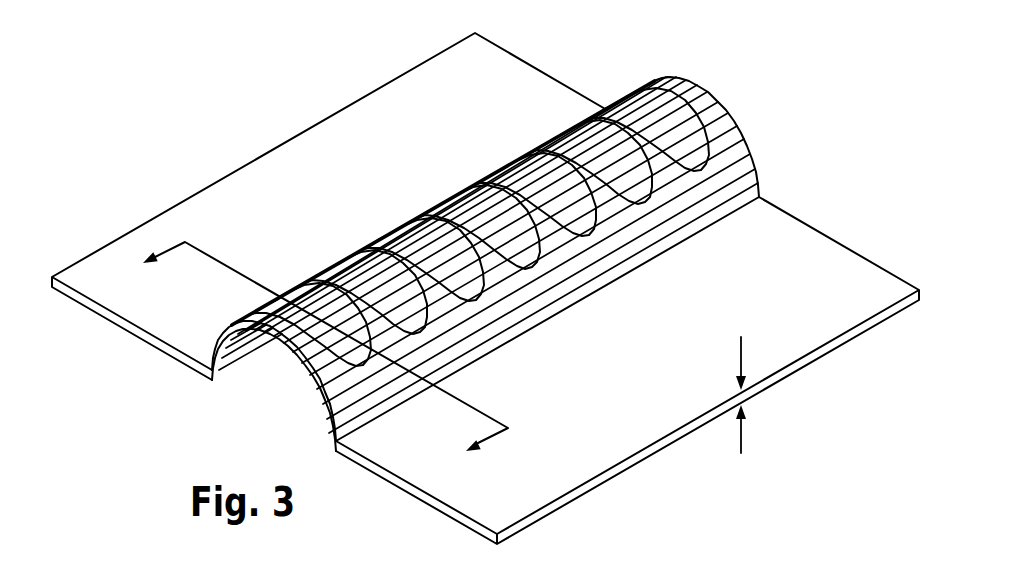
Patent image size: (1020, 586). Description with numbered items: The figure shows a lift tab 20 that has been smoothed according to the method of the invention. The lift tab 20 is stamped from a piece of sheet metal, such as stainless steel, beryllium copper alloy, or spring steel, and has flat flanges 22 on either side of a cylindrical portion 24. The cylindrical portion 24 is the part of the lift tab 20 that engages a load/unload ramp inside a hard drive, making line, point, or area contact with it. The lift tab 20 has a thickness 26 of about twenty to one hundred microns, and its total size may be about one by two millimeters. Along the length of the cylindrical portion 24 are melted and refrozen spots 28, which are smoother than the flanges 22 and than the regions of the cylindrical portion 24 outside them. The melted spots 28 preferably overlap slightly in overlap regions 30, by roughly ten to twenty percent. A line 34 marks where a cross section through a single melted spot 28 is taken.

The lift tab 20 is at (163, 159).
The flat flanges 22 is at (401, 186).
The cylindrical portion 24 is at (706, 92).
The thickness 26 is at (741, 443).
The melted spots 28 is at (570, 193).
The overlap regions 30 is at (662, 139).
The line 34 is at (218, 259).